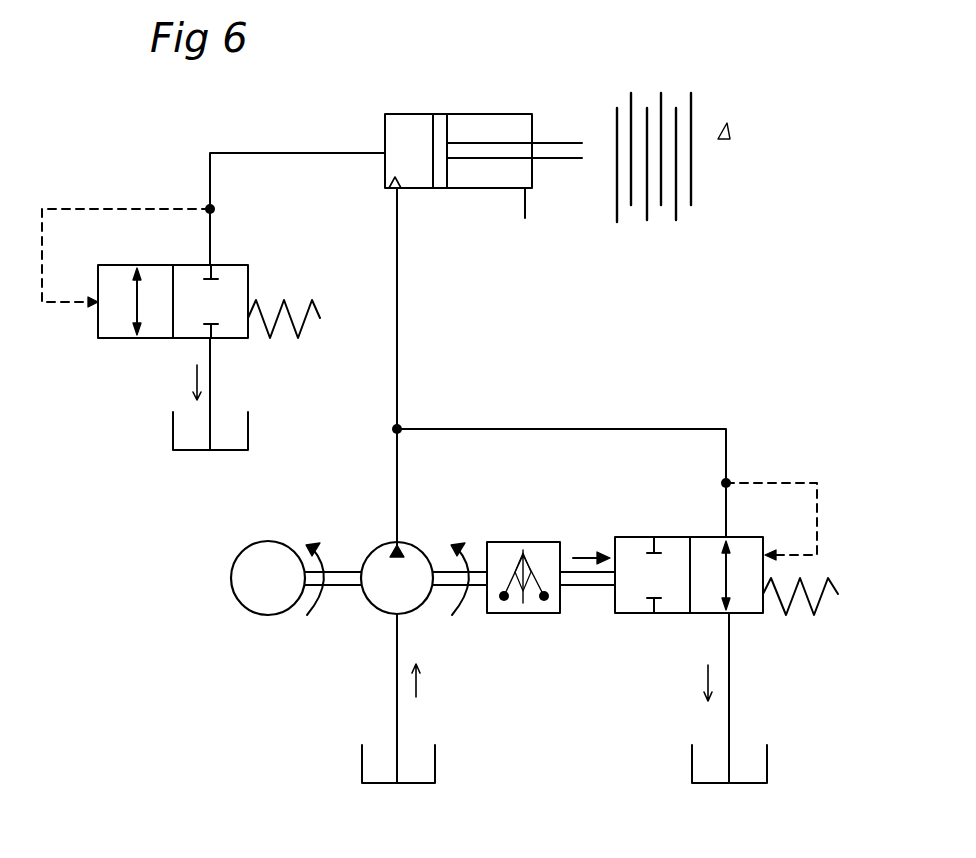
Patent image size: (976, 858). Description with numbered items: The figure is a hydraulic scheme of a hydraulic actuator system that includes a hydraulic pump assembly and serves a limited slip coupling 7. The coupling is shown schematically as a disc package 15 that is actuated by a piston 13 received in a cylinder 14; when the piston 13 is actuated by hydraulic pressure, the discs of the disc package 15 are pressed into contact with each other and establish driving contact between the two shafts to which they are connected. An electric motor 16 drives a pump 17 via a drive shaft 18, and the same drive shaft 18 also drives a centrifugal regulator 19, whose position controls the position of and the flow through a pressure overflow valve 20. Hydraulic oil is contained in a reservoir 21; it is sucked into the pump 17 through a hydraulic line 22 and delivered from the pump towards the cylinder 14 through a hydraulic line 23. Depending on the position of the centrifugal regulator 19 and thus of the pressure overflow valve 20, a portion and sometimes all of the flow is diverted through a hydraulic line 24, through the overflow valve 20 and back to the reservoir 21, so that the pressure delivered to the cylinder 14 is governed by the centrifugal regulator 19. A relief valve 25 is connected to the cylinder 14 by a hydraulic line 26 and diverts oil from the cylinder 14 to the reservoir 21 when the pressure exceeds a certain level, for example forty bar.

The limited slip coupling 7 is at (730, 124).
The piston 13 is at (440, 114).
The cylinder 14 is at (405, 114).
The disc package 15 is at (657, 90).
The electric motor 16 is at (268, 555).
The pump 17 is at (375, 570).
The drive shaft 18 is at (346, 582).
The centrifugal regulator 19 is at (531, 613).
The pressure overflow valve 20 is at (700, 622).
The reservoir 21 is at (172, 434).
The hydraulic line 22 is at (396, 688).
The hydraulic line 23 is at (396, 470).
The hydraulic line 24 is at (494, 427).
The relief valve 25 is at (143, 344).
The hydraulic line 26 is at (292, 150).